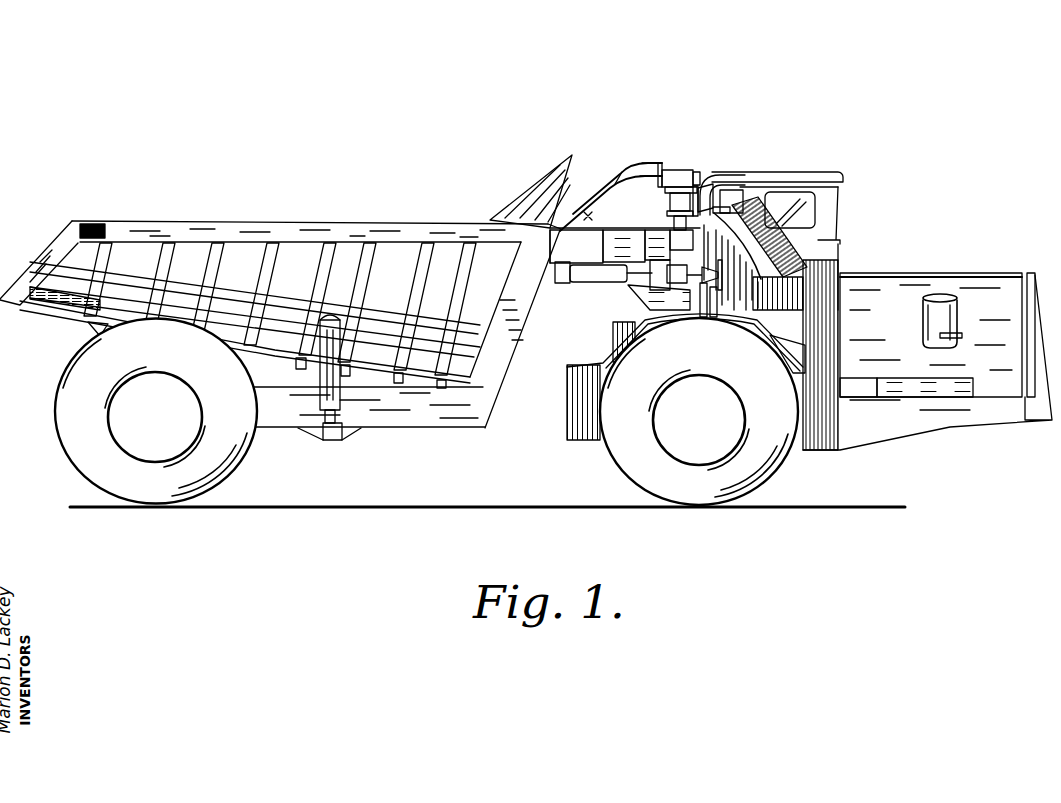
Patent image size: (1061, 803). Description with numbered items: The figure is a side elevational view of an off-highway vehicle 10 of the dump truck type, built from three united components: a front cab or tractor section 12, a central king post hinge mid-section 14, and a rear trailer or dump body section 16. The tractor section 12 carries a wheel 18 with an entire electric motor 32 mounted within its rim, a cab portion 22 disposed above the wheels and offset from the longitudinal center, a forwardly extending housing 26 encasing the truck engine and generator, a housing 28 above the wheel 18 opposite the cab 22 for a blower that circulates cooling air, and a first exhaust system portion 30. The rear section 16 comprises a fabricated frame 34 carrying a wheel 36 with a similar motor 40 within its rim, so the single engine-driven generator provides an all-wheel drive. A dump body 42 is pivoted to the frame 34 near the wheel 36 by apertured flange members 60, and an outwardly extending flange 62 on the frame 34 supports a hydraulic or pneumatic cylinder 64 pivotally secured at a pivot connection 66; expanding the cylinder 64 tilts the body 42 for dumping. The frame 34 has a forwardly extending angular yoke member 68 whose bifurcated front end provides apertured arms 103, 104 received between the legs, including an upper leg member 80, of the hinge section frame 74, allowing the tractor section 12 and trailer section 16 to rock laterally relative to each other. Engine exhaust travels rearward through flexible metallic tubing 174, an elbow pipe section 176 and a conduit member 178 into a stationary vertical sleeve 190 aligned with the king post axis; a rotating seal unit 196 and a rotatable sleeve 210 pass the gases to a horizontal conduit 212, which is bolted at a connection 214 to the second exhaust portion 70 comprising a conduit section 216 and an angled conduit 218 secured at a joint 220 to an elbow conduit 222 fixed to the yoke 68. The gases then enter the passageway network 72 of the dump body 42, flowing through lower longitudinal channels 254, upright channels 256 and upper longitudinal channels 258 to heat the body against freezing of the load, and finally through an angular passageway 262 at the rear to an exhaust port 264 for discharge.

The off-highway vehicle 10 is at (413, 233).
The tractor section 12 is at (871, 297).
The king post hinge section 14 is at (704, 236).
The rear trailer section 16 is at (157, 231).
The wheel 18 is at (772, 472).
The cab portion 22 is at (829, 207).
The housing 26 is at (1003, 285).
The housing 28 is at (794, 297).
The exhaust system portion 30 is at (752, 200).
The motor 32 is at (668, 436).
The frame 34 is at (487, 412).
The wheel 36 is at (228, 465).
The motor 40 is at (118, 420).
The dump body 42 is at (285, 262).
The apertured flange member 60 is at (96, 330).
The flange 62 is at (331, 441).
The hydraulic or pneumatic cylinder 64 is at (338, 393).
The pivot connection 66 is at (315, 432).
The yoke member 68 is at (587, 205).
The exhaust system portion 70 is at (643, 180).
The passageway network 72 is at (358, 297).
The hinge section frame 74 is at (730, 303).
The upper leg member 80 is at (675, 214).
The apertured arm 103 is at (678, 239).
The apertured arm 104 is at (643, 298).
The flexible metallic tubing 174 is at (790, 220).
The elbow pipe section 176 is at (794, 183).
The conduit member 178 is at (736, 186).
The sleeve 190 is at (672, 197).
The rotating seal unit 196 is at (708, 184).
The rotatable sleeve 210 is at (696, 180).
The conduit 212 is at (678, 170).
The bolted connection 214 is at (660, 170).
The conduit section 216 is at (631, 168).
The conduit member 218 is at (590, 213).
The connection 220 is at (547, 218).
The elbow conduit section 222 is at (549, 229).
The longitudinally extending channels 254 is at (431, 385).
The upwardly extending channels 256 is at (396, 355).
The longitudinally extending channels 258 is at (380, 318).
The angular passageway 262 is at (26, 262).
The exhaust port 264 is at (94, 226).